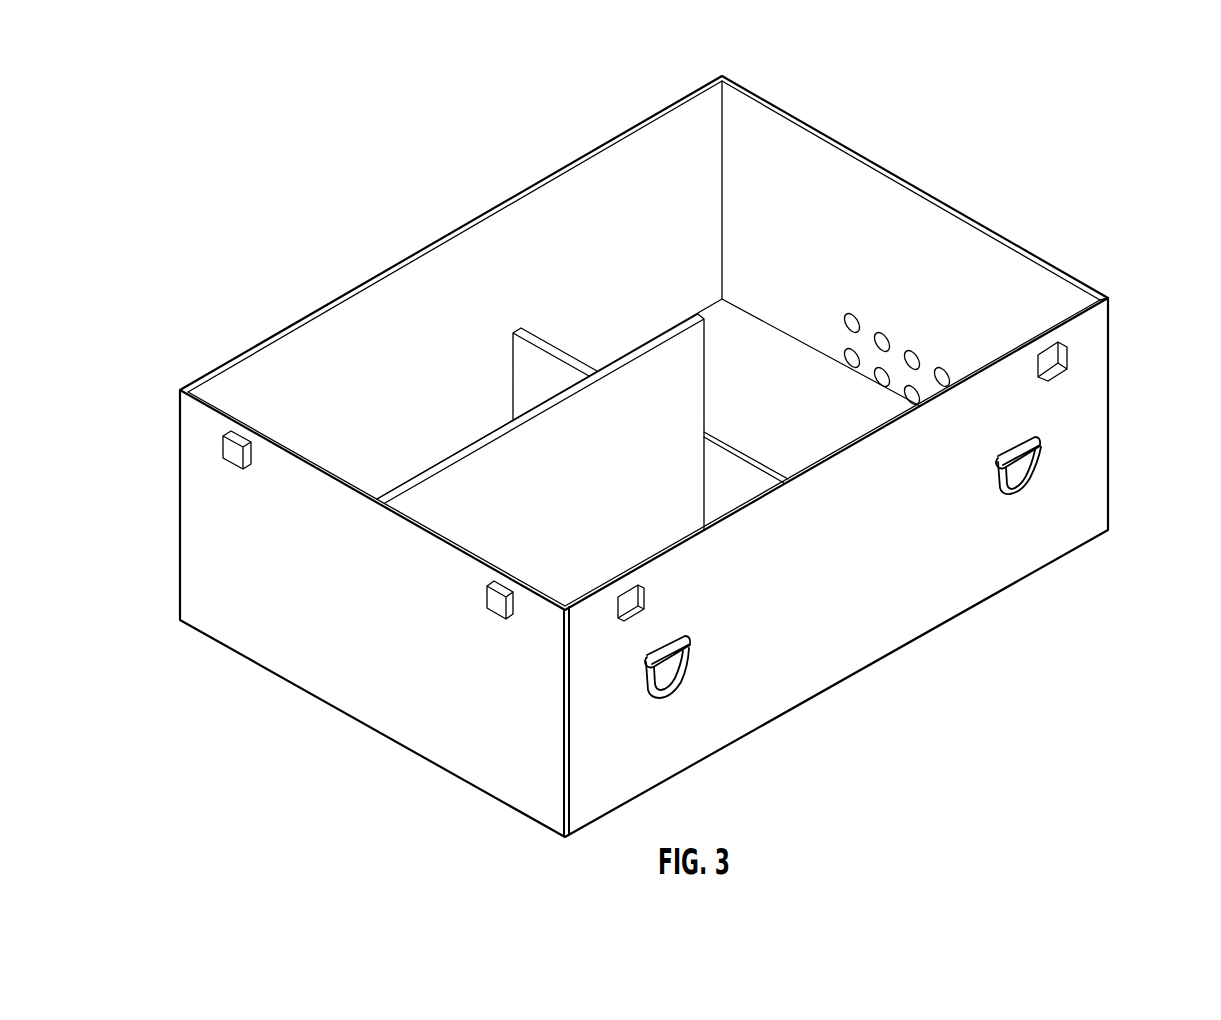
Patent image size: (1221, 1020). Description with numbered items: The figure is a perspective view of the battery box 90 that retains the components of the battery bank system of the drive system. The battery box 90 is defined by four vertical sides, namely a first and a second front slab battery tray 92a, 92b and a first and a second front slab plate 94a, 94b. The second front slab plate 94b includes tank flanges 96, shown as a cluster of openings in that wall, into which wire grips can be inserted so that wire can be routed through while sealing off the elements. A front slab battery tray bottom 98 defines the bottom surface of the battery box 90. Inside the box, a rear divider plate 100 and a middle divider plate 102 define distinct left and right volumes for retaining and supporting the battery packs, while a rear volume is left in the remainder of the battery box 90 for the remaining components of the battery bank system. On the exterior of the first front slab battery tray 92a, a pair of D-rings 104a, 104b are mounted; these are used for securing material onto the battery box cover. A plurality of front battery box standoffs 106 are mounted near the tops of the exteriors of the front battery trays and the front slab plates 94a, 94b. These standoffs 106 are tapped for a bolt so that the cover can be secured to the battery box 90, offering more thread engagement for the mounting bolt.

The battery box 90 is at (1067, 180).
The first front slab battery tray 92a is at (1090, 404).
The second front slab battery tray 92b is at (615, 132).
The first front slab plate 94a is at (200, 498).
The second front slab plate 94b is at (818, 180).
The tank flanges 96 is at (856, 310).
The front slab battery tray bottom 98 is at (725, 332).
The rear divider plate 100 is at (545, 365).
The middle divider plate 102 is at (502, 478).
The D-ring 104a is at (688, 664).
The D-ring 104b is at (1038, 445).
The front battery box standoffs 106 is at (1052, 358).